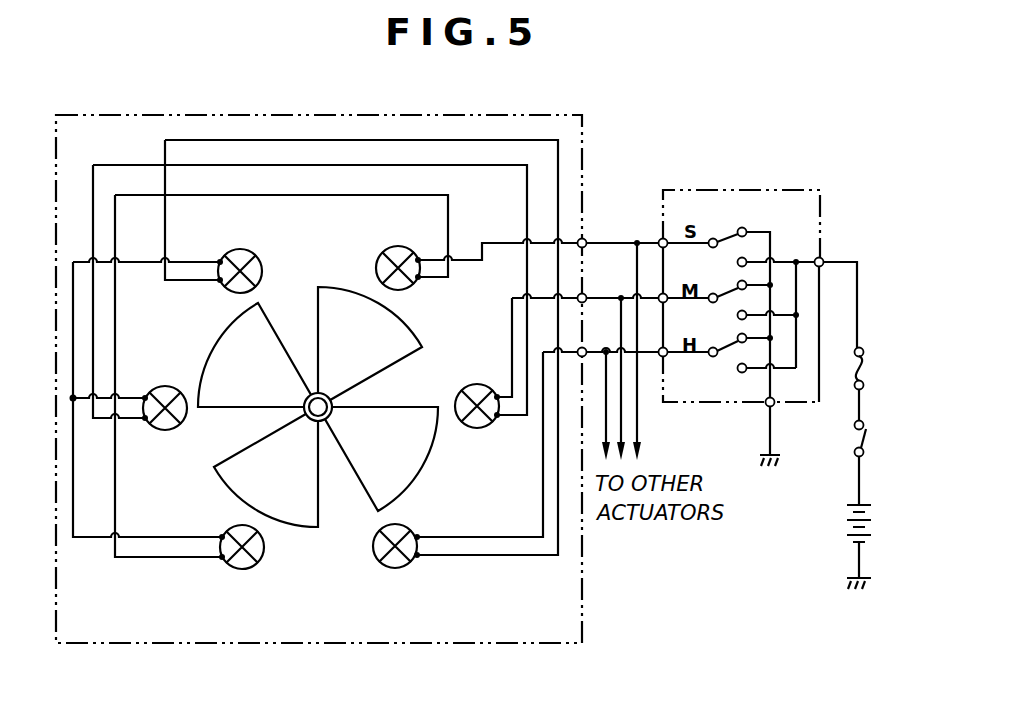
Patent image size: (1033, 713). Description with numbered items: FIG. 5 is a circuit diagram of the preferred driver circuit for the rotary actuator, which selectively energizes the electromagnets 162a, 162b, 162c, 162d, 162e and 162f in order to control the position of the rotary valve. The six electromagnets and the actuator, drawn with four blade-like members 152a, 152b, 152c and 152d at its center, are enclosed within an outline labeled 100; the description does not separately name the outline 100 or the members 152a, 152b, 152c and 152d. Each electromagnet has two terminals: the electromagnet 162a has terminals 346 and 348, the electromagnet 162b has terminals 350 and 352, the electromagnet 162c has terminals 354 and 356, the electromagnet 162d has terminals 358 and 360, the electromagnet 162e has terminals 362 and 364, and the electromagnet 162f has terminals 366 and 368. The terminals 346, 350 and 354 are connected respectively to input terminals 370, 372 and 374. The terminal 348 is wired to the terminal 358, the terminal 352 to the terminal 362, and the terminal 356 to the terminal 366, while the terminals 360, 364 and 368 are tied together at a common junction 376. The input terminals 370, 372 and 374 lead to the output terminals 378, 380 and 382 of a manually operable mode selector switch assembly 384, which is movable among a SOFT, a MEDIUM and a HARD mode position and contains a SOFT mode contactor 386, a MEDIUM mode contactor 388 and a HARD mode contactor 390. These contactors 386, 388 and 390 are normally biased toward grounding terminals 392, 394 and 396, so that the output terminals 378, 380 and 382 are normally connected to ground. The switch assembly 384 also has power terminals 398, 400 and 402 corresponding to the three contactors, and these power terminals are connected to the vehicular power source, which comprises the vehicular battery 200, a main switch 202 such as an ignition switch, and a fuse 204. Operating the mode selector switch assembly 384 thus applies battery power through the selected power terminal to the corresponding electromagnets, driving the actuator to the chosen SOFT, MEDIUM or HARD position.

The control system housing 100 is at (592, 136).
The fan blade 152a is at (340, 288).
The fan blade 152b is at (301, 527).
The fan blade 152c is at (418, 467).
The fan blade 152d is at (272, 327).
The electromagnet 162a is at (382, 257).
The electromagnet 162b is at (470, 386).
The electromagnet 162c is at (395, 568).
The electromagnet 162d is at (252, 566).
The electromagnet 162e is at (178, 410).
The electromagnet 162f is at (244, 251).
The terminal 346 is at (420, 260).
The terminal 348 is at (419, 278).
The terminal 350 is at (497, 395).
The terminal 352 is at (498, 417).
The terminal 354 is at (417, 536).
The terminal 356 is at (416, 557).
The terminal 358 is at (222, 558).
The terminal 360 is at (221, 538).
The terminal 362 is at (145, 421).
The terminal 364 is at (144, 398).
The terminal 366 is at (219, 281).
The terminal 368 is at (220, 262).
The input terminal 370 is at (585, 240).
The input terminal 372 is at (585, 296).
The input terminal 374 is at (543, 351).
The junction 376 is at (74, 400).
The output terminal 378 is at (662, 240).
The output terminal 380 is at (664, 295).
The output terminal 382 is at (662, 356).
The mode selector switch assembly 384 is at (826, 178).
The SOFT mode contactor 386 is at (733, 233).
The MEDIUM mode contactor 388 is at (746, 315).
The HARD mode contactor 390 is at (725, 348).
The grounding terminal 392 is at (744, 229).
The grounding terminal 394 is at (746, 285).
The grounding terminal 396 is at (795, 372).
The power terminal 398 is at (746, 260).
The power terminal 400 is at (746, 338).
The power terminal 402 is at (742, 373).
The fuse 204 is at (862, 372).
The main switch 202 is at (866, 434).
The vehicular battery 200 is at (872, 523).